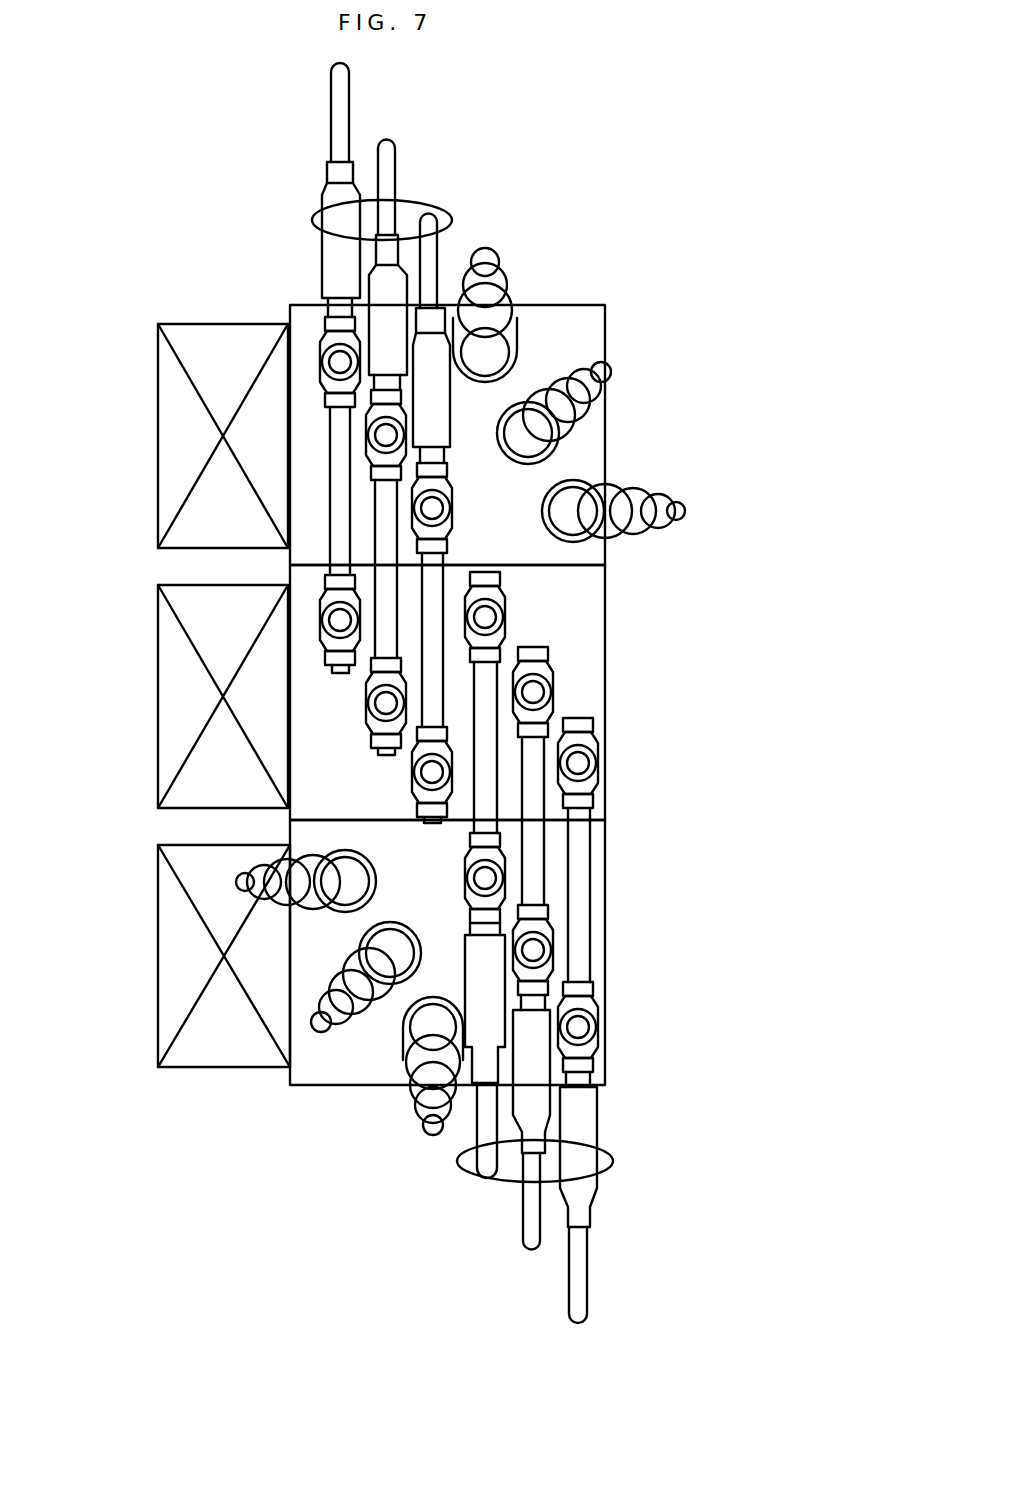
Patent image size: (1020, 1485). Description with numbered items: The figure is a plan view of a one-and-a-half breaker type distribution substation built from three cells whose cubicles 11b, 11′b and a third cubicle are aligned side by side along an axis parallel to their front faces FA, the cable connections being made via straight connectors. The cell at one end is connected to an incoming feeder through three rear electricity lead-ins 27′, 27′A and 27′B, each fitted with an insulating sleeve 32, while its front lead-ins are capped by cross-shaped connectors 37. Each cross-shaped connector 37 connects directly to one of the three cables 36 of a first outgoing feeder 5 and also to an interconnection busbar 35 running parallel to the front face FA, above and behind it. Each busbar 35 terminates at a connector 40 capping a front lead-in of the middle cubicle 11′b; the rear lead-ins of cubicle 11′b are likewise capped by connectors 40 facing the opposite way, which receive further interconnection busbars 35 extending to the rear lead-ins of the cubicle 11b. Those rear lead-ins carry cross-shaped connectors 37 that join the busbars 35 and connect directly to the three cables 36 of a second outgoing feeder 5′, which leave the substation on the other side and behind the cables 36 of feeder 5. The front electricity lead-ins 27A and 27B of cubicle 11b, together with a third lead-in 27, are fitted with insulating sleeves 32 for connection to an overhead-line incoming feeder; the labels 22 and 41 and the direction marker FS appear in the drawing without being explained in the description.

The first outgoing feeder 5 is at (312, 220).
The second outgoing feeder 5′ is at (613, 1160).
The cubicle 11′b is at (578, 648).
The cubicle 11b is at (598, 946).
The front assembly coil 22 is at (186, 518).
The socket 27 is at (396, 924).
The front electricity lead-in 27A is at (368, 868).
The front electricity lead-in 27B is at (405, 1030).
The rear electricity lead-in 27′ is at (598, 462).
The rear electricity lead-in 27′A is at (518, 352).
The rear electricity lead-in 27′B is at (560, 540).
The insulating sleeve 32 is at (498, 285).
The interconnection busbar 35 is at (582, 816).
The cable 36 is at (387, 162).
The cross-shaped connector 37 is at (446, 512).
The connector 40 is at (490, 590).
The connector body 41 is at (592, 1120).
The front face FA is at (152, 357).
The insertion direction FS is at (575, 336).